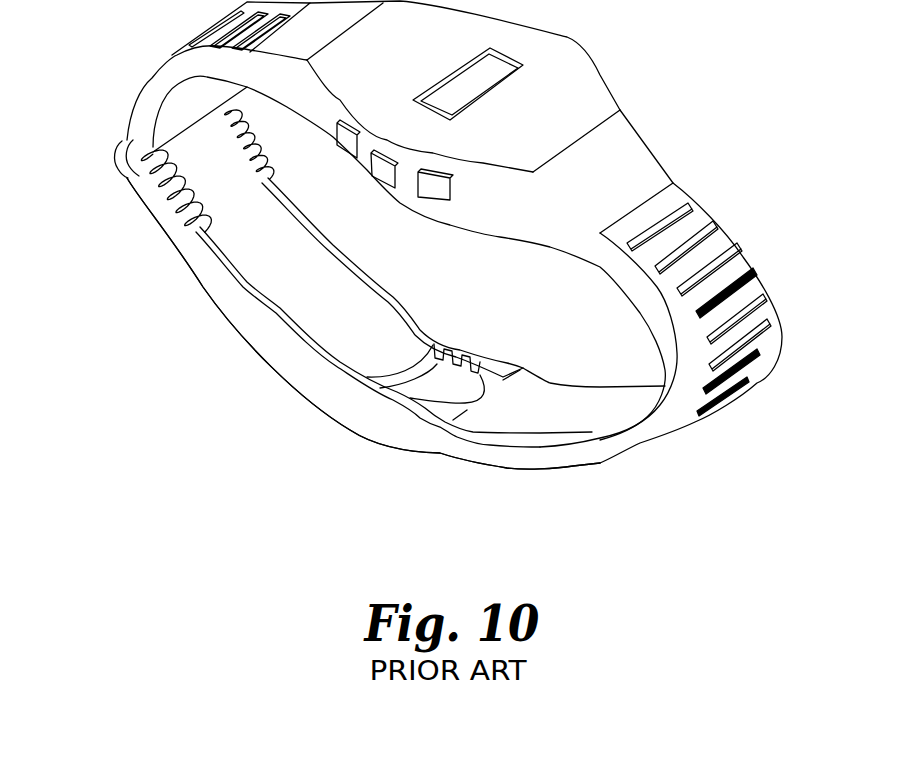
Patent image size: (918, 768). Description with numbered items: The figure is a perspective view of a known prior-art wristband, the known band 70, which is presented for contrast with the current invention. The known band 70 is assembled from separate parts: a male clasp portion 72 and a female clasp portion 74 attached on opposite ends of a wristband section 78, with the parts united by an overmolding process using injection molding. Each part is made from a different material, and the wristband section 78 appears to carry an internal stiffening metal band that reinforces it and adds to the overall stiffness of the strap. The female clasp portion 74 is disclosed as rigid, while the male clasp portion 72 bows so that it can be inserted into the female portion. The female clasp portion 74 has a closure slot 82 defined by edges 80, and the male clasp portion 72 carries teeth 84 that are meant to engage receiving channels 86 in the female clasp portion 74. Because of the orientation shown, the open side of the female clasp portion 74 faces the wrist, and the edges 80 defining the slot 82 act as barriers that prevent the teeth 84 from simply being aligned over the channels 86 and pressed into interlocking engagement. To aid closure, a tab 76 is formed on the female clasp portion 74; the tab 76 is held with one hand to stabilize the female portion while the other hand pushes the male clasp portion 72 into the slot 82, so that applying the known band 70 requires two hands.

The known band 70 is at (655, 49).
The male clasp portion 72 is at (297, 280).
The female clasp portion 74 is at (413, 428).
The tab 76 is at (117, 166).
The wristband section 78 is at (472, 197).
The edges 80 is at (247, 283).
The slot 82 is at (460, 397).
The teeth 84 is at (167, 188).
The channels 86 is at (455, 370).